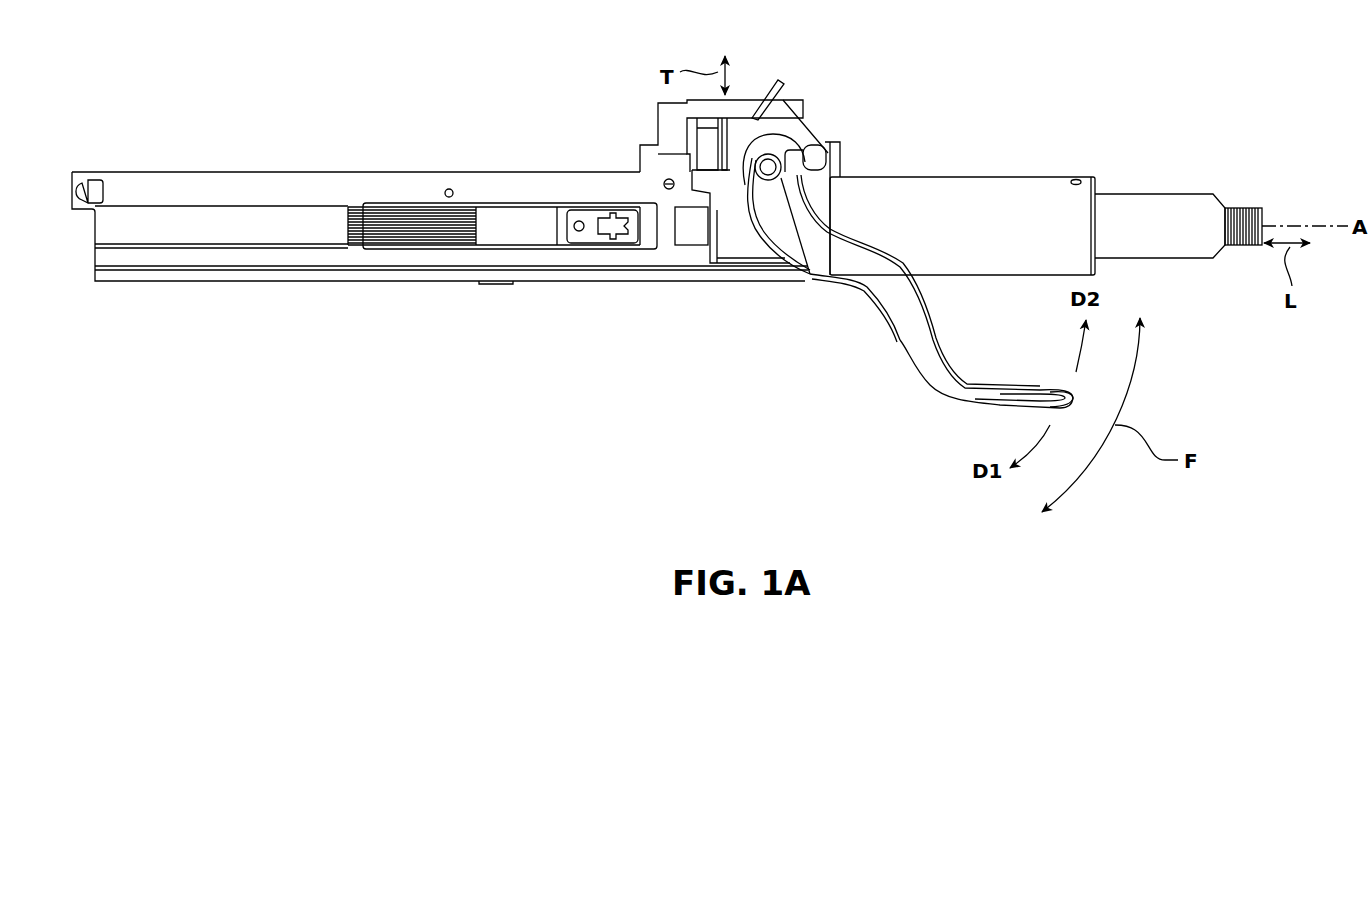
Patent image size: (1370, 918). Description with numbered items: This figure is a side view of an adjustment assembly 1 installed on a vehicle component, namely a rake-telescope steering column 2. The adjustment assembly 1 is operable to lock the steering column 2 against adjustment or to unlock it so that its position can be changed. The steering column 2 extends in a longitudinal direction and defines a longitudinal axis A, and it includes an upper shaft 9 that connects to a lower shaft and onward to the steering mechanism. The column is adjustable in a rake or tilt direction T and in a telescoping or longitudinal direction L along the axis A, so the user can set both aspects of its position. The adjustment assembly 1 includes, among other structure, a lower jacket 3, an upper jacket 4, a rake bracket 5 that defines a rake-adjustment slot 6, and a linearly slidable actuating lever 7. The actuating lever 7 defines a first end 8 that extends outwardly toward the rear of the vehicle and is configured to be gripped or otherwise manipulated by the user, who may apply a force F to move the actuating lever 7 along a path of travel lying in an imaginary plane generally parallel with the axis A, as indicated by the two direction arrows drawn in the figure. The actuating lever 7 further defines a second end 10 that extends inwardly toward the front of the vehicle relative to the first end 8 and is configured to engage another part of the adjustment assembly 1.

The adjustment assembly 1 is at (840, 138).
The steering column 2 is at (1240, 206).
The lower jacket 3 is at (490, 284).
The upper jacket 4 is at (1025, 177).
The rake bracket 5 is at (703, 256).
The rake-adjustment slot 6 is at (784, 101).
The actuating lever 7 is at (876, 312).
The first end 8 is at (1055, 388).
The upper shaft 9 is at (1103, 192).
The second end 10 is at (792, 150).